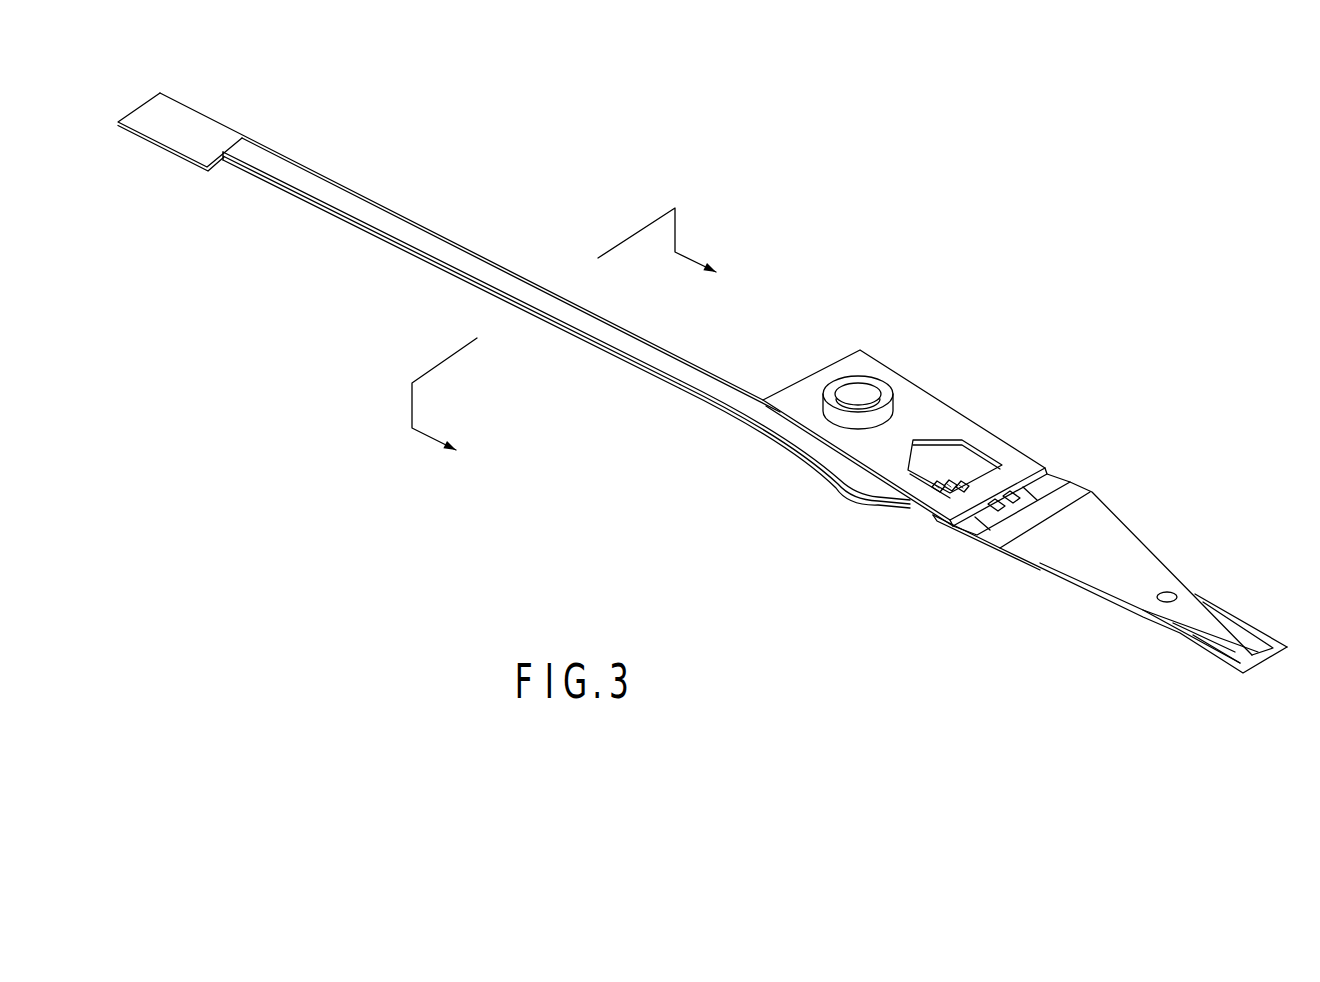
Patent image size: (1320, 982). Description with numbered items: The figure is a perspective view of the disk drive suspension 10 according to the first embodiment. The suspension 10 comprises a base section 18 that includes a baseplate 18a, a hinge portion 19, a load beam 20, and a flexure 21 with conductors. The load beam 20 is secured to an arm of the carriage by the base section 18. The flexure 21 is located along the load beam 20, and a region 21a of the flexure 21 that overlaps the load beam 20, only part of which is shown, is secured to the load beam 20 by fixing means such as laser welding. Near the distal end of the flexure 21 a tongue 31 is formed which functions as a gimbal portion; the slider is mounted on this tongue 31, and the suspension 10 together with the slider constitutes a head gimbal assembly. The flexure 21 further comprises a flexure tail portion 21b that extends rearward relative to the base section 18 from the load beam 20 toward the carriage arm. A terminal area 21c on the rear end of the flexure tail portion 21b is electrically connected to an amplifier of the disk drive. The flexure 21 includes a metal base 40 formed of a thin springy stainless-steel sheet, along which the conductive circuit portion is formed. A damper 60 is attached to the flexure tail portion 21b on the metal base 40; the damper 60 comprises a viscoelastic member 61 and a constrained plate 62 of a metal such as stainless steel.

The suspension 10 is at (1108, 320).
The base section 18 is at (815, 385).
The baseplate 18a is at (912, 397).
The hinge portion 19 is at (1047, 483).
The load beam 20 is at (1122, 547).
The flexure 21 is at (858, 513).
The region 21a is at (965, 482).
The flexure tail portion 21b is at (378, 246).
The terminal area 21c is at (187, 142).
The tongue 31 is at (1243, 628).
The metal base 40 is at (635, 365).
The damper 60 is at (485, 262).
The viscoelastic member 61 is at (430, 255).
The constrained plate 62 is at (363, 210).